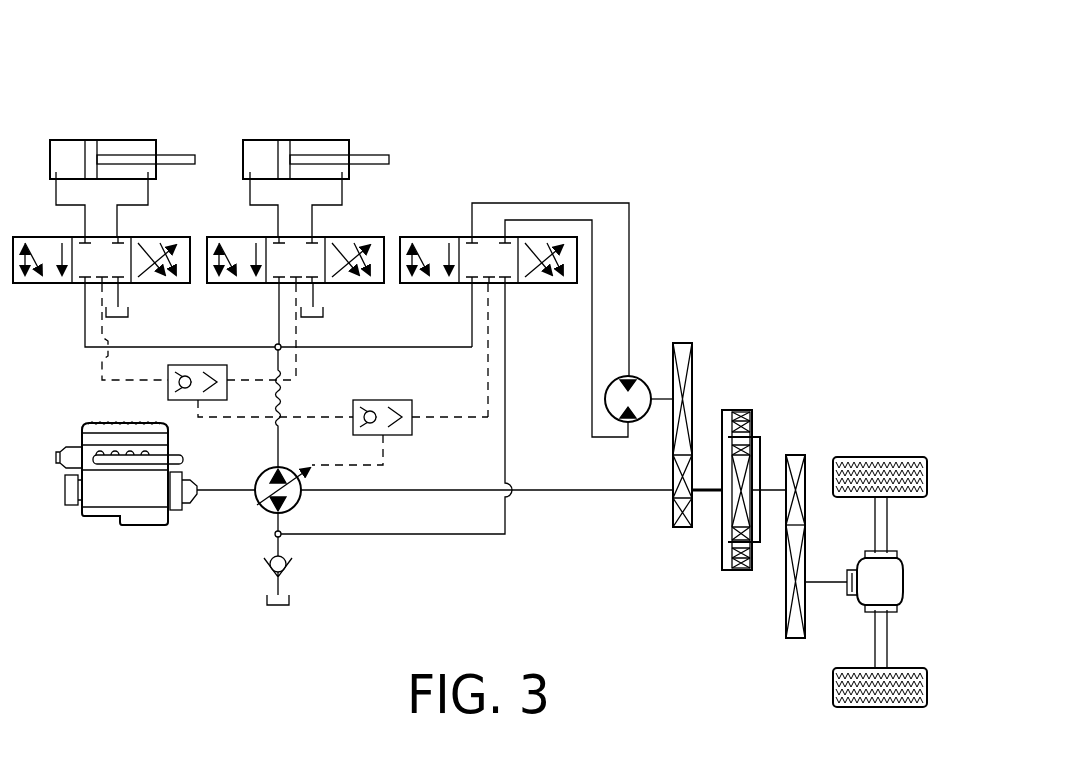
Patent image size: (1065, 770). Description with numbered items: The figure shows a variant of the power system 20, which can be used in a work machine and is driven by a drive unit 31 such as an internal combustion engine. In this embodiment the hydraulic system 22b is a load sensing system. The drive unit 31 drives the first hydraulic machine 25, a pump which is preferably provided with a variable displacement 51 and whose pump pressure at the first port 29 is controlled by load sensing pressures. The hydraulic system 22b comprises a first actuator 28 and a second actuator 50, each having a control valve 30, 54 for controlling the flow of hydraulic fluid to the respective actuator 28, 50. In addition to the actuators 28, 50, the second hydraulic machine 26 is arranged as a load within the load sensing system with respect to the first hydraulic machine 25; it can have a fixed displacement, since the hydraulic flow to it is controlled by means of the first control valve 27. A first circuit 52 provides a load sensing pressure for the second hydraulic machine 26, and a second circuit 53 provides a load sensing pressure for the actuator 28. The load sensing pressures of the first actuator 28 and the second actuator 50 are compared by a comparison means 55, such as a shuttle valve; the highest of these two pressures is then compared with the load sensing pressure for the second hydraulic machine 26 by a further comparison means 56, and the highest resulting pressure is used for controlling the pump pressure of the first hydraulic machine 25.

The power system 20 is at (690, 184).
The hydraulic system 22b is at (168, 72).
The first hydraulic machine 25 is at (298, 508).
The second hydraulic machine 26 is at (647, 377).
The first control valve 27 is at (440, 236).
The first actuator 28 is at (305, 140).
The first port 29 is at (262, 462).
The control valve 30 is at (357, 235).
The drive unit 31 is at (138, 527).
The second actuator 50 is at (104, 140).
The variable displacement 51 is at (258, 507).
The first circuit 52 is at (450, 412).
The second circuit 53 is at (295, 380).
The control valve 54 is at (162, 236).
The comparison means 55 is at (198, 365).
The further comparison means 56 is at (385, 400).